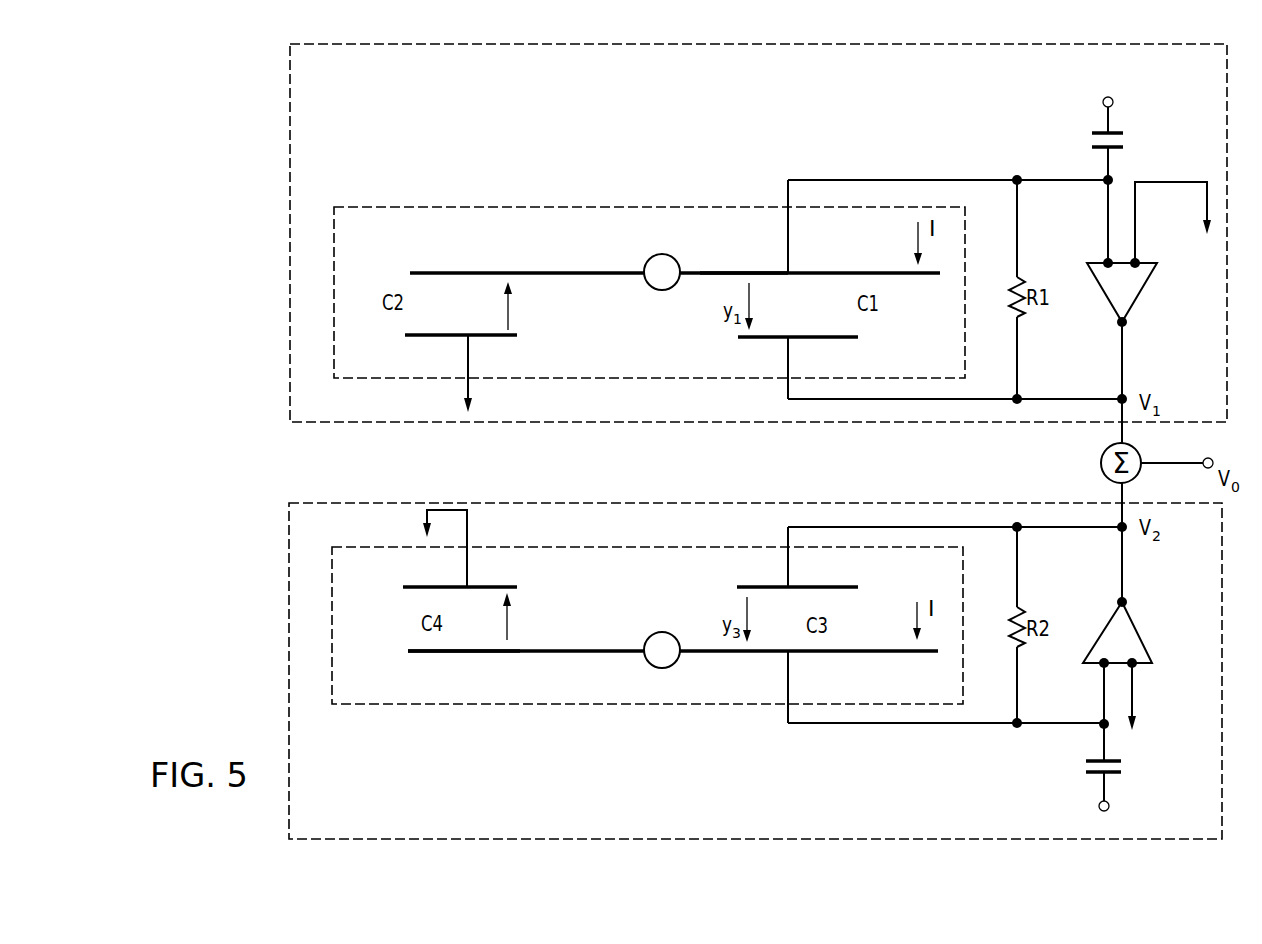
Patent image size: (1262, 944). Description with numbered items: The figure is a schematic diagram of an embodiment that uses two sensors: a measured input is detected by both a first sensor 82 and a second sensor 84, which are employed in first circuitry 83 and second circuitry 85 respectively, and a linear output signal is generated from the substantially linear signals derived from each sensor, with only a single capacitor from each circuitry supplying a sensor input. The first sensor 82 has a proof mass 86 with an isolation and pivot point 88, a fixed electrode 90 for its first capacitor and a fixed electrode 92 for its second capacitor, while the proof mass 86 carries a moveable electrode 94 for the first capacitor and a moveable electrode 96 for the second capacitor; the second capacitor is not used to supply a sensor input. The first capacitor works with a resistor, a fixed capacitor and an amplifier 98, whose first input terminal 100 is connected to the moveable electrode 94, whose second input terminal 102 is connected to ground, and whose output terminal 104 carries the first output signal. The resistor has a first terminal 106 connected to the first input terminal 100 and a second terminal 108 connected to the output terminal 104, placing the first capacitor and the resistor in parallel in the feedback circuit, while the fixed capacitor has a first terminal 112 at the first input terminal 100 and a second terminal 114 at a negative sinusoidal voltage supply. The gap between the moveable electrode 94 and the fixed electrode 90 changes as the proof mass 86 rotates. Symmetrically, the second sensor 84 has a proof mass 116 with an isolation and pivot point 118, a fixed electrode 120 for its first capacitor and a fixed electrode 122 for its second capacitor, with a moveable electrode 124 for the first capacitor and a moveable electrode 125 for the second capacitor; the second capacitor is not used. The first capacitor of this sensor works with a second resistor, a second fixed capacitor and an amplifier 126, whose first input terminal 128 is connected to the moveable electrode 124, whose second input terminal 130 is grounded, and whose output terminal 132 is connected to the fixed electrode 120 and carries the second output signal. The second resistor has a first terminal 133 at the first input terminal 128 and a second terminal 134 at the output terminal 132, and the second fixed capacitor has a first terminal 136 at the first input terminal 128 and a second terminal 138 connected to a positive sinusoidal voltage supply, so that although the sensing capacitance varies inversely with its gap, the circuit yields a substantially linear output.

The first sensor 82 is at (369, 238).
The first circuitry 83 is at (325, 77).
The second sensor 84 is at (369, 578).
The second circuitry 85 is at (321, 532).
The proof mass 86 is at (726, 265).
The isolation and pivot point 88 is at (655, 289).
The fixed electrode 90 is at (842, 338).
The fixed electrode 92 is at (421, 337).
The moveable electrode 94 is at (835, 273).
The moveable electrode 96 is at (517, 273).
The amplifier 98 is at (1156, 313).
The first input terminal 100 is at (1107, 260).
The second input terminal 102 is at (1136, 260).
The output terminal 104 is at (1120, 325).
The first terminal 106 is at (1019, 190).
The second terminal 108 is at (1020, 398).
The first terminal 112 is at (1105, 178).
The second terminal 114 is at (1116, 119).
The proof mass 116 is at (430, 665).
The isolation and pivot point 118 is at (652, 666).
The fixed electrode 120 is at (833, 587).
The fixed electrode 122 is at (492, 587).
The moveable electrode 124 is at (855, 652).
The moveable electrode 125 is at (520, 652).
The amplifier 126 is at (1155, 612).
The first input terminal 128 is at (1103, 666).
The second input terminal 130 is at (1134, 668).
The output terminal 132 is at (1119, 600).
The first terminal 133 is at (1019, 721).
The second terminal 134 is at (1020, 530).
The first terminal 136 is at (1100, 728).
The second terminal 138 is at (1114, 787).